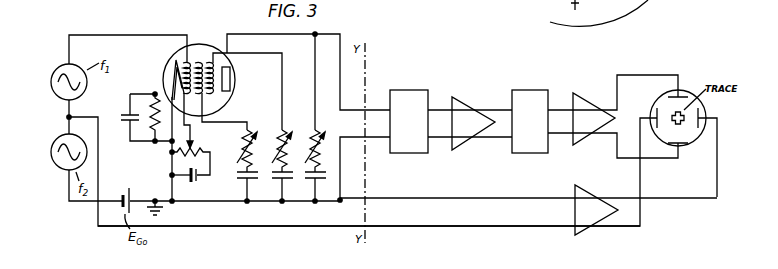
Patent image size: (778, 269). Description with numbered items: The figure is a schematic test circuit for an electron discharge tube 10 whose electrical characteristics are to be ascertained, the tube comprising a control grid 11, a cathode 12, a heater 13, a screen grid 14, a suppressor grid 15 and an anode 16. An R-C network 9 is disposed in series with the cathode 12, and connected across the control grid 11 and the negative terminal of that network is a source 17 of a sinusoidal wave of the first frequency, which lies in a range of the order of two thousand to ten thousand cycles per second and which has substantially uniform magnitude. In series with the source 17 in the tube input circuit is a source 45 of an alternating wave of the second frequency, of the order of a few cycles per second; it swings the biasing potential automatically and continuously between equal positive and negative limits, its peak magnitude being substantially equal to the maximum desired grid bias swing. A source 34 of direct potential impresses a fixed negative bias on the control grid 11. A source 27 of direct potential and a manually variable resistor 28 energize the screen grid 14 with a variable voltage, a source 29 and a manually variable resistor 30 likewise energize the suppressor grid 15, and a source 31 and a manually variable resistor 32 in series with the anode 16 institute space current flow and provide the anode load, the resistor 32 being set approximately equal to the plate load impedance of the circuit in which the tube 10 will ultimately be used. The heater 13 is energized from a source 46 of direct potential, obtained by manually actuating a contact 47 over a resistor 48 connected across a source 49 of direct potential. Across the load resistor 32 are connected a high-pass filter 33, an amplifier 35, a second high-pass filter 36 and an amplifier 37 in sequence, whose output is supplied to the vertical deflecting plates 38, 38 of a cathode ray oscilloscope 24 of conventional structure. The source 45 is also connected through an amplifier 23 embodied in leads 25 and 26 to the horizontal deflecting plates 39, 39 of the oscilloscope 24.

The R-C network 9 is at (131, 138).
The electron discharge tube 10 is at (174, 64).
The control grid 11 is at (188, 64).
The cathode 12 is at (167, 69).
The heater 13 is at (171, 80).
The screen grid 14 is at (205, 64).
The suppressor grid 15 is at (230, 80).
The anode 16 is at (230, 72).
The source of sinusoidal wave f1 17 is at (55, 67).
The amplifier 23 is at (584, 226).
The cathode ray oscilloscope 24 is at (706, 140).
The lead 25 is at (444, 199).
The lead 26 is at (522, 222).
The source of direct potential 27 is at (240, 183).
The manually variable resistor 28 is at (248, 133).
The source of direct potential 29 is at (275, 183).
The manually variable resistor 30 is at (284, 133).
The source of direct potential 31 is at (308, 183).
The manually variable resistor 32 is at (317, 133).
The high-pass filter 33 is at (410, 153).
The source of direct potential 34 is at (127, 188).
The amplifier 35 is at (458, 143).
The high-pass filter 36 is at (528, 153).
The amplifier 37 is at (579, 139).
The vertical deflecting plates 38 is at (684, 94).
The horizontal deflecting plates 39 is at (655, 112).
The source of alternating wave f2 45 is at (60, 167).
The source of direct potential 46 is at (170, 171).
The contact 47 is at (193, 140).
The resistor 48 is at (205, 150).
The source of direct potential 49 is at (193, 181).